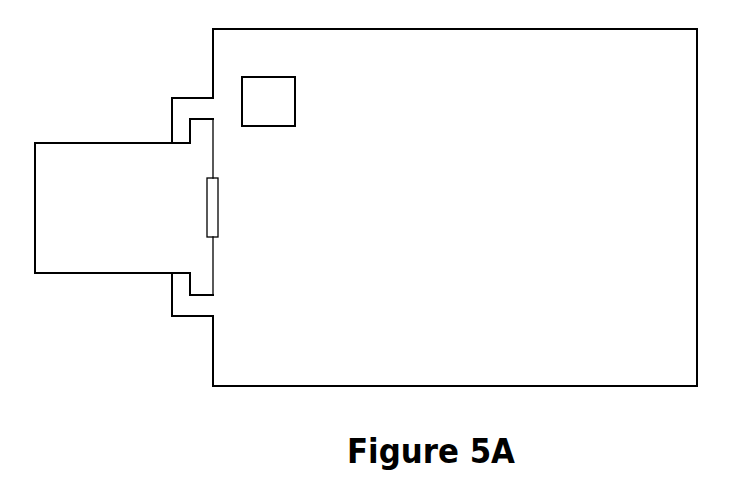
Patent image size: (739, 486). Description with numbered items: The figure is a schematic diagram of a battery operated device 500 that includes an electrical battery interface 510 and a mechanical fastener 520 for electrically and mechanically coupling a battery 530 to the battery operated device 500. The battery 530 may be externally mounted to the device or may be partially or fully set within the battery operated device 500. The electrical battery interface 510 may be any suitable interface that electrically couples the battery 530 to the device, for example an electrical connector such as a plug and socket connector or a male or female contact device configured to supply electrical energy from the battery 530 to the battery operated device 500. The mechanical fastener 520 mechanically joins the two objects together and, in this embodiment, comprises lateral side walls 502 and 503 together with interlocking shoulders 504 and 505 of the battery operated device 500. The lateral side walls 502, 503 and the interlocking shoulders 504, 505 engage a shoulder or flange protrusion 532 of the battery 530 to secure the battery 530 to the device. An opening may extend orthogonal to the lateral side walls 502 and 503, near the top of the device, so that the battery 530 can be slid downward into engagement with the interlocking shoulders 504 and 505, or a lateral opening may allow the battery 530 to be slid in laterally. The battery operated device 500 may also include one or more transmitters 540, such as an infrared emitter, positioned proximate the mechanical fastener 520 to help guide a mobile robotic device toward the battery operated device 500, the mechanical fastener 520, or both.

The battery operated device 500 is at (690, 59).
The lateral side wall 502 is at (202, 105).
The lateral side wall 503 is at (202, 307).
The interlocking shoulder 504 is at (180, 133).
The interlocking shoulder 505 is at (182, 282).
The electrical battery interface 510 is at (213, 207).
The mechanical fastener 520 is at (113, 62).
The battery 530 is at (143, 217).
The flange protrusion 532 is at (203, 130).
The transmitter 540 is at (288, 113).